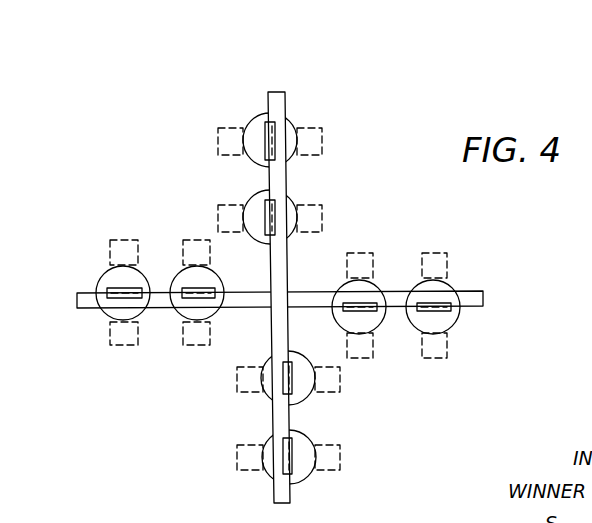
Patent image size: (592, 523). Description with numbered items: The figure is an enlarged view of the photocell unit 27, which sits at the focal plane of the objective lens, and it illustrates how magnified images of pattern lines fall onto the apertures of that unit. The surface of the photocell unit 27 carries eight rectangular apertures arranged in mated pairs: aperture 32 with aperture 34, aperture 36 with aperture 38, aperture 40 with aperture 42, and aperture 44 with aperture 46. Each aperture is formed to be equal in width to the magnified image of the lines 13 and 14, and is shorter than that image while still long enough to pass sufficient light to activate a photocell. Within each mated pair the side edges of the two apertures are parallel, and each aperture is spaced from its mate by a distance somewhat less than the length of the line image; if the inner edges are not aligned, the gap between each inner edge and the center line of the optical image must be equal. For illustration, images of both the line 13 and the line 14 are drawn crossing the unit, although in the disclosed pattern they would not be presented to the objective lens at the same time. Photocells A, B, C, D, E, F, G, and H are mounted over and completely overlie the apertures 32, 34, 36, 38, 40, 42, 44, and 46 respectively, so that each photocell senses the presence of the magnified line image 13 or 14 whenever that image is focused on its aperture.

The line 13 is at (88, 301).
The line 14 is at (279, 98).
The photocell unit 27 is at (422, 222).
The aperture 32 is at (266, 205).
The aperture 34 is at (284, 364).
The aperture 36 is at (266, 122).
The aperture 38 is at (283, 452).
The aperture 40 is at (210, 287).
The aperture 42 is at (370, 314).
The aperture 44 is at (137, 287).
The aperture 46 is at (452, 312).
The photocell A is at (292, 197).
The photocell B is at (307, 400).
The photocell C is at (292, 120).
The photocell D is at (305, 485).
The photocell E is at (190, 266).
The photocell F is at (347, 281).
The photocell G is at (107, 268).
The photocell H is at (456, 284).